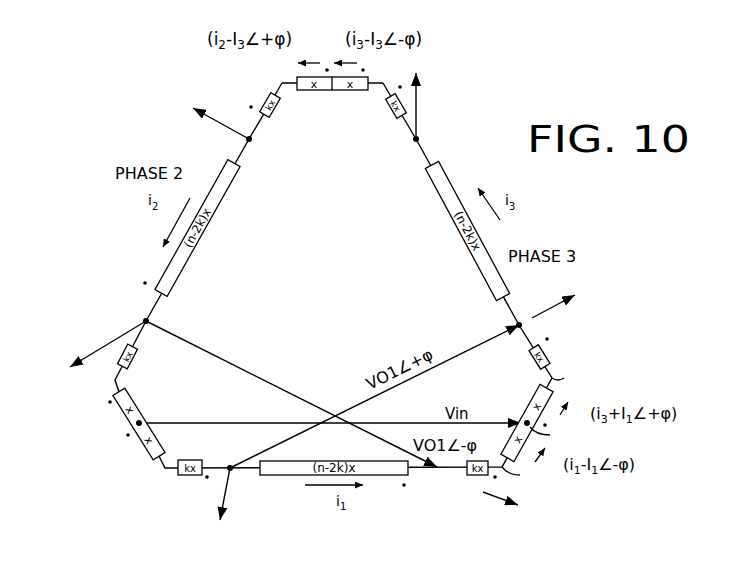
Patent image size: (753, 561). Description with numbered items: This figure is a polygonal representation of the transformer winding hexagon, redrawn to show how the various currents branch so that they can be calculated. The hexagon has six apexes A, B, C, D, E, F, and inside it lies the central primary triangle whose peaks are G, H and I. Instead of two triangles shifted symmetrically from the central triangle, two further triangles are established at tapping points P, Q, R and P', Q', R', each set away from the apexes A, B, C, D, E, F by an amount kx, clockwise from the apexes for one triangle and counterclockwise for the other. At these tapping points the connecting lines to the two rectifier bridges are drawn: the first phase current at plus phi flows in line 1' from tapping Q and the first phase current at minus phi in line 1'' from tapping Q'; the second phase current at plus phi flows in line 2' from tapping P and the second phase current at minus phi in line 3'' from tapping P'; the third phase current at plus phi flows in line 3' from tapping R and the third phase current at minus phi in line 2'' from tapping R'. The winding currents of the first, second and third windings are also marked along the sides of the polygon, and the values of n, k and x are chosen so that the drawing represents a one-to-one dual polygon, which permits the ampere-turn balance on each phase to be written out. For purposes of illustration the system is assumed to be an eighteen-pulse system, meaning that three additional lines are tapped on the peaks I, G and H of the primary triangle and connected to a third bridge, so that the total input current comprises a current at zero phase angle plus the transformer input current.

The line 1' is at (583, 284).
The line 1'' is at (514, 506).
The line 2' is at (241, 497).
The line 2'' is at (89, 357).
The line 3' is at (194, 113).
The line 3'' is at (444, 106).
The hexagon apex A is at (143, 470).
The hexagon apex B is at (512, 477).
The hexagon apex C is at (564, 380).
The hexagon apex D is at (394, 75).
The hexagon apex E is at (267, 75).
The hexagon apex F is at (104, 392).
The peak of primary triangle G is at (121, 437).
The peak of primary triangle H is at (547, 434).
The peak of primary triangle I is at (331, 112).
The tapping point P is at (227, 484).
The tapping point P' is at (135, 283).
The tapping point Q is at (555, 338).
The tapping point Q' is at (420, 487).
The tapping point R is at (270, 147).
The tapping point R' is at (392, 147).